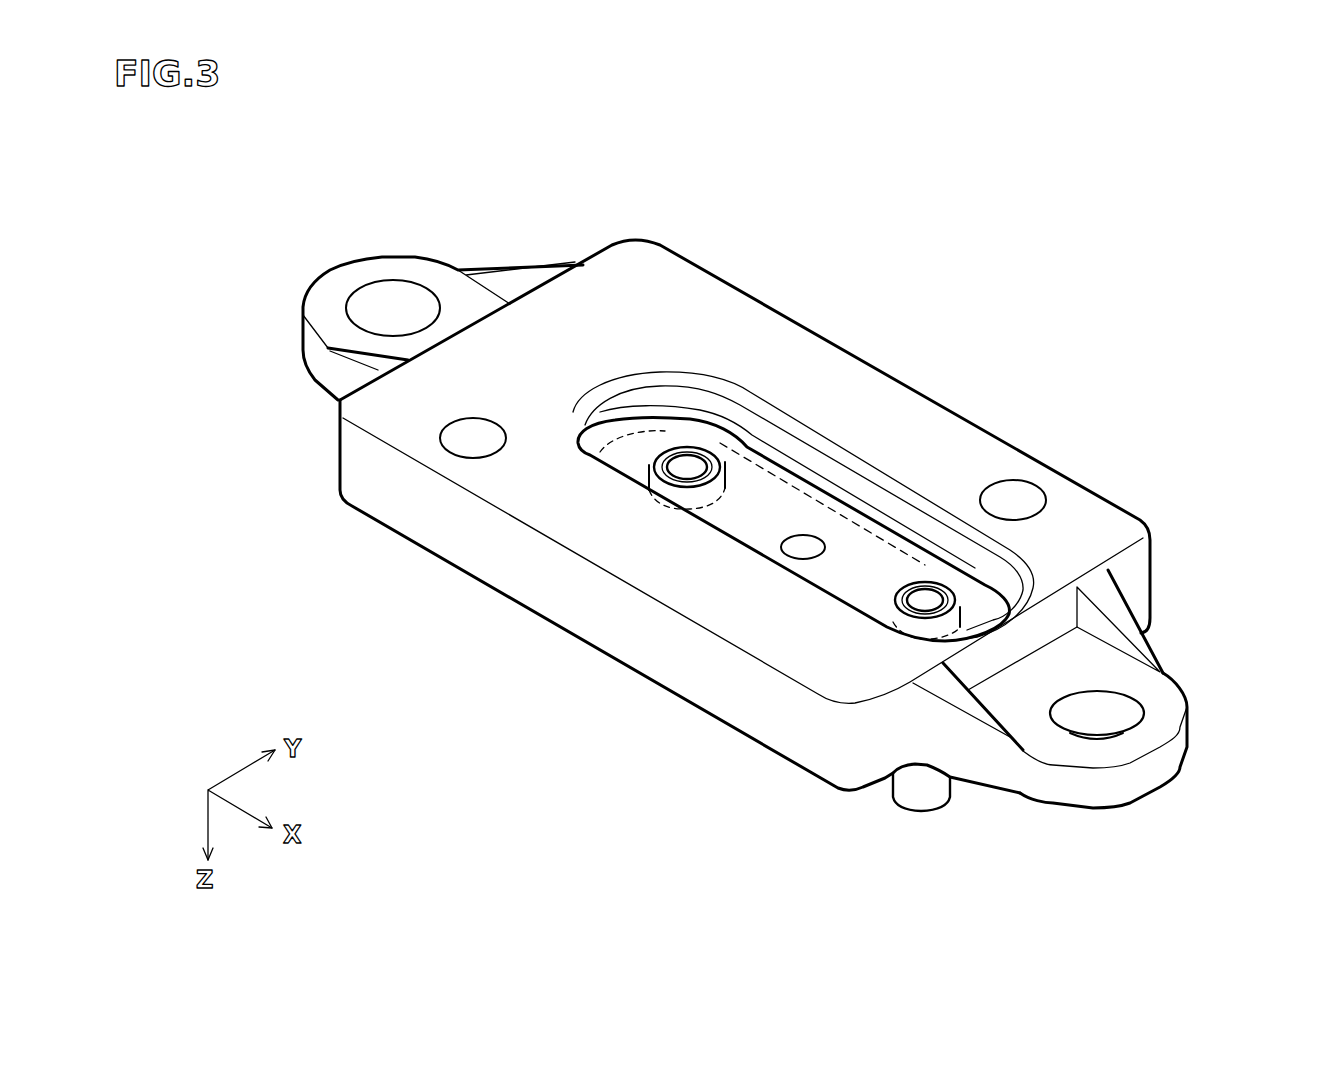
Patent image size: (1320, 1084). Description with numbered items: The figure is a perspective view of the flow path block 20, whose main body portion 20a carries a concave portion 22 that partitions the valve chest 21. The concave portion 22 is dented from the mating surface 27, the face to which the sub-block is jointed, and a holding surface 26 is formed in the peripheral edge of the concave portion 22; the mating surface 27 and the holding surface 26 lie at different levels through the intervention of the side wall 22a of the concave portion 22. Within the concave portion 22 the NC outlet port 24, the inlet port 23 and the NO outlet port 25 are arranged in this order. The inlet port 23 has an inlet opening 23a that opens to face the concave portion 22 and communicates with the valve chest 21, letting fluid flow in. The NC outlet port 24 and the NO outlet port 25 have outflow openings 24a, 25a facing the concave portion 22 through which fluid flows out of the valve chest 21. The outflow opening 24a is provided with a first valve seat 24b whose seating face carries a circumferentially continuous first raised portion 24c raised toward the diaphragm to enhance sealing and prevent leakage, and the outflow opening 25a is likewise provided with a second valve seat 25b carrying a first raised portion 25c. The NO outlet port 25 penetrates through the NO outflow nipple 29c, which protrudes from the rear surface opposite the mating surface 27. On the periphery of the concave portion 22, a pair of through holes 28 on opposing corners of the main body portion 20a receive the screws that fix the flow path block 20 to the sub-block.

The flow path block 20 is at (1007, 227).
The main body portion 20a is at (634, 262).
The valve chest 21 is at (810, 547).
The concave portion 22 is at (648, 437).
The side wall 22a is at (827, 463).
The inlet port 23 is at (923, 597).
The inlet opening 23a is at (793, 548).
The NC outlet port 24 is at (687, 465).
The outflow opening 24a is at (650, 463).
The first valve seat 24b is at (727, 488).
The first raised portion 24c is at (648, 457).
The NO outlet port 25 is at (944, 596).
The outflow opening 25a is at (913, 622).
The second valve seat 25b is at (1000, 545).
The first raised portion 25c is at (920, 613).
The holding surface 26 is at (548, 280).
The mating surface 27 is at (603, 427).
The through holes 28 is at (460, 445).
The NO outflow nipple 29c is at (930, 795).